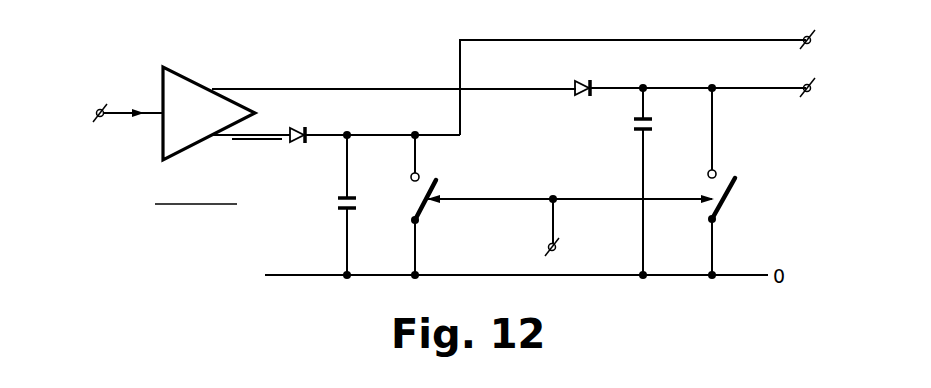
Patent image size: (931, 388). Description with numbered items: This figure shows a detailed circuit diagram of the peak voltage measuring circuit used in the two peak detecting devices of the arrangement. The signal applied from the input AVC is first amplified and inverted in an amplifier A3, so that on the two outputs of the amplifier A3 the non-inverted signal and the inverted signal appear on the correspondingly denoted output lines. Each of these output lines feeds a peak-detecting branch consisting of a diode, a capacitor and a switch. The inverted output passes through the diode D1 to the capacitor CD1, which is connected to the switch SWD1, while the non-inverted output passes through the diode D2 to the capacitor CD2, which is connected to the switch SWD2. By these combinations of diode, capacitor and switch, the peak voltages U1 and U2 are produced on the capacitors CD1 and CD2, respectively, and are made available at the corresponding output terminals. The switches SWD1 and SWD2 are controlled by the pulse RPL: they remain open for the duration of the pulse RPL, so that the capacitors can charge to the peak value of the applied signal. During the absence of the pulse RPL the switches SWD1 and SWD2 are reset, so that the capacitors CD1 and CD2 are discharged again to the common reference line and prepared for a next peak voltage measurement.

The amplifier A3 is at (191, 72).
The AVC signal input AVC is at (128, 99).
The diode D1 is at (296, 127).
The diode D2 is at (579, 80).
The capacitor CD1 is at (336, 204).
The capacitor CD2 is at (632, 127).
The switch SWD1 is at (419, 174).
The switch SWD2 is at (716, 172).
The pulse RPL is at (606, 240).
The peak voltage U1 is at (804, 100).
The peak voltage U2 is at (801, 52).